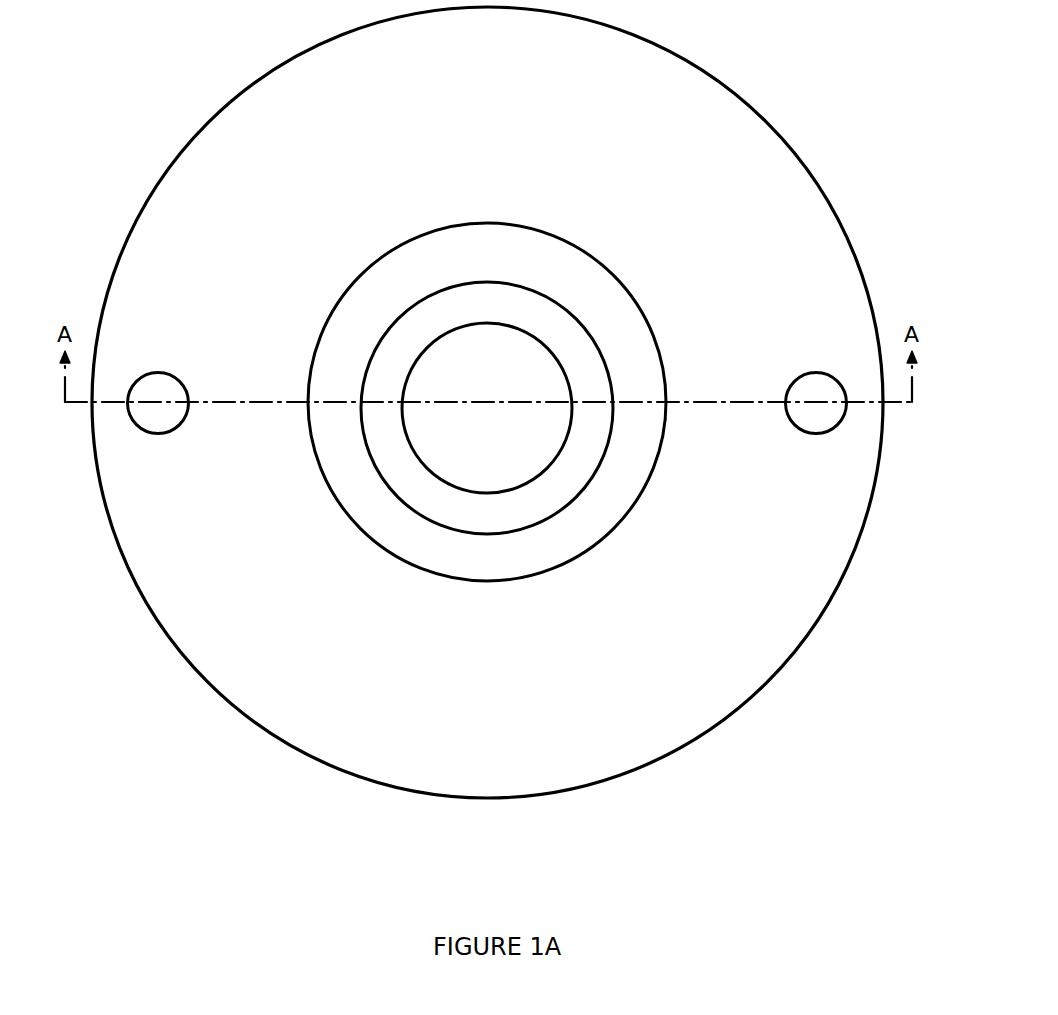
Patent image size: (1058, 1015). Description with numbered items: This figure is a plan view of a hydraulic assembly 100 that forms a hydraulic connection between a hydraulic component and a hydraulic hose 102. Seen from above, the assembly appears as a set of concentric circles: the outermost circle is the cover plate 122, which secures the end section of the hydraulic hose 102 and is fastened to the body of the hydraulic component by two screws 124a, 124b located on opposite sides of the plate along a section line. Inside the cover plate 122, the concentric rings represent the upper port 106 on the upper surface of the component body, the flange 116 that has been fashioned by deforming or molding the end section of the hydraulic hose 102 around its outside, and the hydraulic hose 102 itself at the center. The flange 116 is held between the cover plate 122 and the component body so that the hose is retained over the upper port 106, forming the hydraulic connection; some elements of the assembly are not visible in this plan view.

The hydraulic assembly 100 is at (168, 81).
The cover plate 122 is at (150, 227).
The upper port 106 is at (642, 500).
The flange 116 is at (611, 287).
The hydraulic hose 102 is at (596, 362).
The screw 124a is at (148, 417).
The screw 124b is at (835, 415).